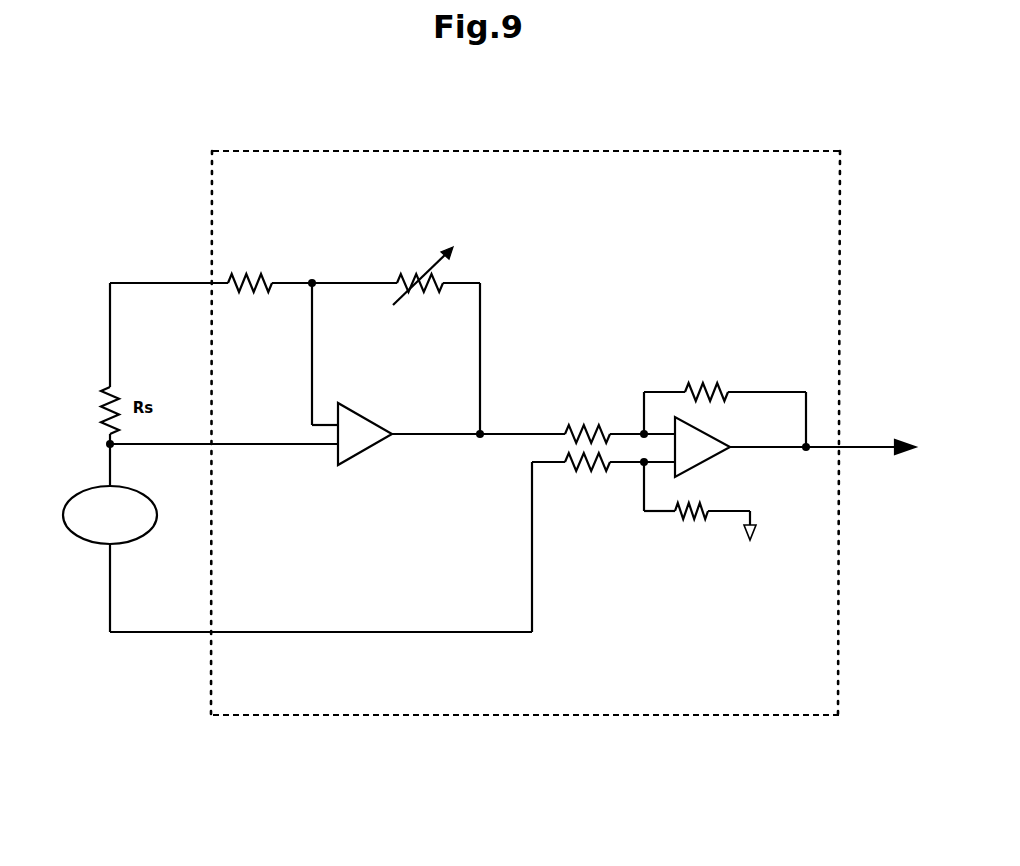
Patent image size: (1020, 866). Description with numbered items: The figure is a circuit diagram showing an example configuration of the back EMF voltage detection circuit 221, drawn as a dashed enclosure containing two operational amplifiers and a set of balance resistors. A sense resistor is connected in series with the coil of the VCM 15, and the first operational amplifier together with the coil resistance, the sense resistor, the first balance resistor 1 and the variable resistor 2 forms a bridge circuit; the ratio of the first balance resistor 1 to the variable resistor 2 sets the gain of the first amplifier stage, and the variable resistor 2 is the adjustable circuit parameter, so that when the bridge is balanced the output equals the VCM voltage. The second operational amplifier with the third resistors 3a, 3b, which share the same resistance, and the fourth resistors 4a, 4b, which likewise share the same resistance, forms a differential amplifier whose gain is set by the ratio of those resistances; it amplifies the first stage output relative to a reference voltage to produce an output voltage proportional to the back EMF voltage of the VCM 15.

The back EMF voltage detection circuit 221 is at (512, 411).
The VCM 15 is at (83, 543).
The balance resistor R1 1 is at (250, 267).
The variable resistor R2 2 is at (423, 286).
The balance resistor R3a 3a is at (587, 419).
The balance resistor R3b 3b is at (587, 483).
The balance resistor R4a 4a is at (706, 377).
The balance resistor R4b 4b is at (691, 527).